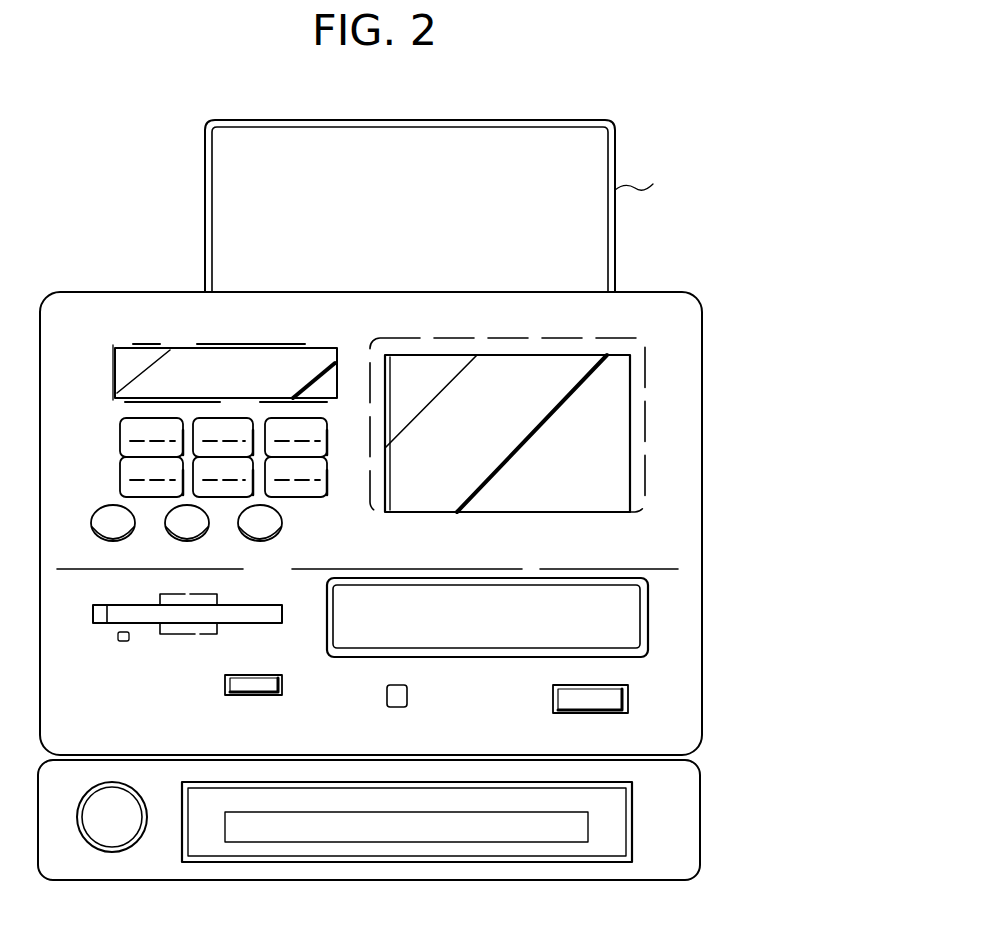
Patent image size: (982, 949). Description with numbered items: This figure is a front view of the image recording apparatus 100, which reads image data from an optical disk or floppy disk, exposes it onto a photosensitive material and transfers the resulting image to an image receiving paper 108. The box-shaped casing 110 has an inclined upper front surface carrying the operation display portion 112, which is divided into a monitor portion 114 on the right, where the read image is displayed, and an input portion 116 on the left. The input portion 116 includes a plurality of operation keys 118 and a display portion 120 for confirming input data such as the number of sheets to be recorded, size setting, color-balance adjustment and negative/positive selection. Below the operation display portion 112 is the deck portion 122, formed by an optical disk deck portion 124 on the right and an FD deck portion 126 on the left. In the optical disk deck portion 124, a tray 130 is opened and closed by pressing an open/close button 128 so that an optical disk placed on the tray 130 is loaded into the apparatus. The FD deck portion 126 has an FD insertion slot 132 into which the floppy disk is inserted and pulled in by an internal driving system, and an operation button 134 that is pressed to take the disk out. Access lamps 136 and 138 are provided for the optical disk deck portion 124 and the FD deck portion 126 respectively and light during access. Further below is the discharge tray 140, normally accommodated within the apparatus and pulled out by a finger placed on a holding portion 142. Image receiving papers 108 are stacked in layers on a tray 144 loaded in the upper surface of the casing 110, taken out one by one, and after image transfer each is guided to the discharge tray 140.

The image recording apparatus 100 is at (451, 504).
The image receiving paper 108 is at (464, 181).
The casing 110 is at (692, 520).
The operation display portion 112 is at (343, 355).
The monitor portion 114 is at (410, 378).
The input portion 116 is at (191, 382).
The operation keys 118 is at (110, 515).
The display portion 120 is at (125, 370).
The deck portion 122 is at (456, 664).
The optical disk deck portion 124 is at (650, 633).
The FD deck portion 126 is at (416, 664).
The open/close button 128 is at (632, 713).
The tray 130 is at (640, 591).
The FD insertion slot 132 is at (105, 624).
The operation button 134 is at (275, 696).
The access lamp 136 is at (400, 700).
The access lamp 138 is at (134, 683).
The discharge tray 140 is at (414, 849).
The holding portion 142 is at (500, 820).
The tray 144 is at (669, 179).